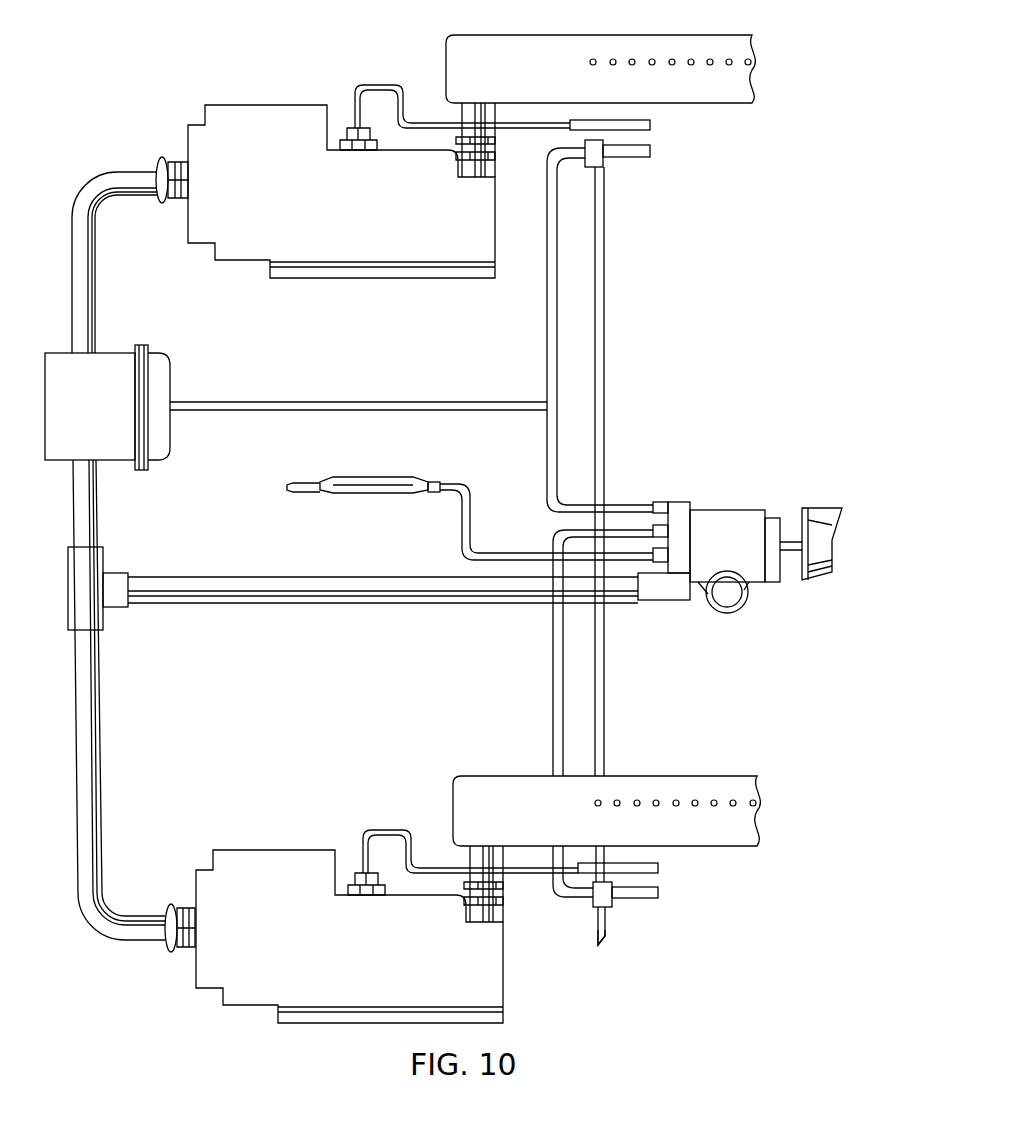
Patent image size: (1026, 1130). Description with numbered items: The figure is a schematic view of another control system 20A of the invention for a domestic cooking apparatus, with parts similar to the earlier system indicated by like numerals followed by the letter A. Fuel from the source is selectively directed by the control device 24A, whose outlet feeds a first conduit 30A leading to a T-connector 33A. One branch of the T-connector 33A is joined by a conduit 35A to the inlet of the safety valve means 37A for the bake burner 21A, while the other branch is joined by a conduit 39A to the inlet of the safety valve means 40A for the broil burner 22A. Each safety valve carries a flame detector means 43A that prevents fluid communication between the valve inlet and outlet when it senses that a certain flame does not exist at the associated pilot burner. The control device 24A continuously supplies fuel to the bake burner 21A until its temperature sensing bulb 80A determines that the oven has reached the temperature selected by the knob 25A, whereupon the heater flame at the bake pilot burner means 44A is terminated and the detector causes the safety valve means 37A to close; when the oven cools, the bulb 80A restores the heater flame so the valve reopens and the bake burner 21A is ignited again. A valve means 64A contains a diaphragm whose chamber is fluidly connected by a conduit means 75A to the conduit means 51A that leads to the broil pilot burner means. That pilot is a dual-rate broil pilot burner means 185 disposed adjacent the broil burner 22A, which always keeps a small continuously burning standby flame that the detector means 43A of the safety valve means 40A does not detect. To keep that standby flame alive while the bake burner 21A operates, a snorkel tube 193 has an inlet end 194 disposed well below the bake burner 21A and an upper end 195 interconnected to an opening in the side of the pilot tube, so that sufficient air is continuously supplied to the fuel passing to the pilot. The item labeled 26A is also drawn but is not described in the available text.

The control system 20A is at (748, 186).
The broil burner 22A is at (703, 38).
The bake burner 21A is at (720, 778).
The safety valve means 40A is at (268, 105).
The safety valve means 37A is at (264, 850).
The flame detector means 43A is at (655, 124).
The dual-rate broil pilot burner means 185 is at (646, 153).
The upper end 195 is at (603, 170).
The snorkel tube 193 is at (606, 382).
The inlet end 194 is at (608, 942).
The bake pilot burner means 44A is at (650, 894).
The conduit means 51A is at (547, 297).
The conduit 39A is at (95, 300).
The conduit 35A is at (102, 740).
The valve means 64A is at (171, 368).
The conduit means 75A is at (413, 402).
The temperature sensing bulb 80A is at (386, 477).
The control device 24A is at (706, 502).
The valve body 26A is at (735, 510).
The knob 25A is at (815, 508).
The T-connector 33A is at (105, 562).
The first conduit 30A is at (318, 601).